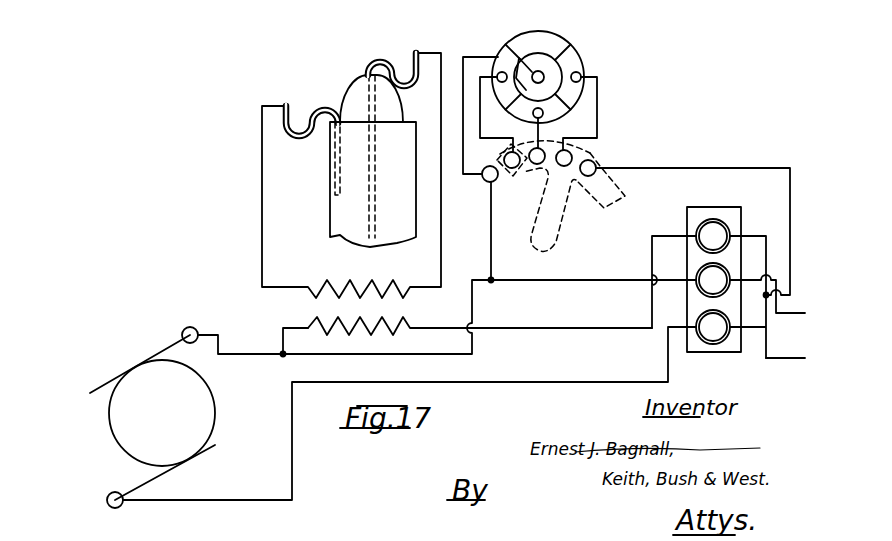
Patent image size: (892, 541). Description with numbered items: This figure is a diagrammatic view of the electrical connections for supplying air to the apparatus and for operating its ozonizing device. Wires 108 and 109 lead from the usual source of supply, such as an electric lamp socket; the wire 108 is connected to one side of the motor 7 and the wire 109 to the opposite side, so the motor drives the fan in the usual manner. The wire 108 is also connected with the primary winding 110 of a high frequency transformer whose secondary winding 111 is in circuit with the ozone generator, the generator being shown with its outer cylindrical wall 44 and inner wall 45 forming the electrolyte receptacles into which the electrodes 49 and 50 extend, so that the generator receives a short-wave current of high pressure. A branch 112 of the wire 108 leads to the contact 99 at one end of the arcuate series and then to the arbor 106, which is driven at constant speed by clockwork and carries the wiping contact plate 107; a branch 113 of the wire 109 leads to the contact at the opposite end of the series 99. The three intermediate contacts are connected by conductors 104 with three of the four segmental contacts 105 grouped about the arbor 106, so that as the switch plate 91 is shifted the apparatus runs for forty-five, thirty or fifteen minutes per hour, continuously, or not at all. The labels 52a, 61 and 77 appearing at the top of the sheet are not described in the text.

The motor 7 is at (152, 417).
The outer cylindrical wall 44 is at (373, 161).
The inner wall 45 is at (354, 101).
The electrode 49 is at (405, 80).
The electrode 50 is at (293, 127).
The conduit 52a is at (277, 10).
The conduit 61 is at (448, 2).
The conduit 77 is at (516, 0).
The arcuate switch plate 91 is at (594, 159).
The contacts 99 is at (496, 180).
The conductors 104 is at (535, 133).
The segmental contacts 105 is at (575, 62).
The arbor 106 is at (541, 68).
The wiping contact plate 107 is at (535, 80).
The wire 108 is at (768, 306).
The wire 109 is at (803, 358).
The primary winding 110 is at (405, 323).
The secondary winding 111 is at (394, 285).
The branch 112 is at (492, 216).
The branch 113 is at (663, 168).